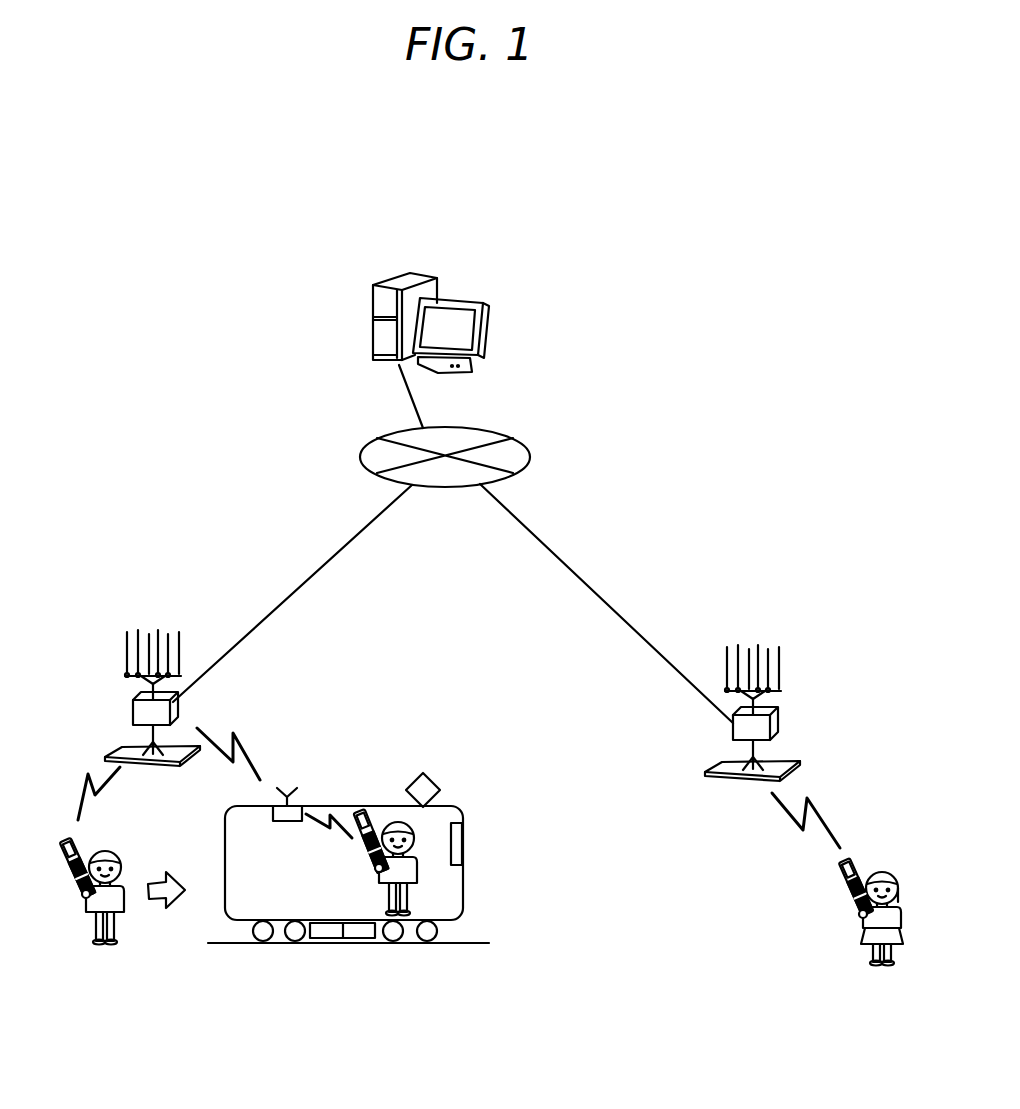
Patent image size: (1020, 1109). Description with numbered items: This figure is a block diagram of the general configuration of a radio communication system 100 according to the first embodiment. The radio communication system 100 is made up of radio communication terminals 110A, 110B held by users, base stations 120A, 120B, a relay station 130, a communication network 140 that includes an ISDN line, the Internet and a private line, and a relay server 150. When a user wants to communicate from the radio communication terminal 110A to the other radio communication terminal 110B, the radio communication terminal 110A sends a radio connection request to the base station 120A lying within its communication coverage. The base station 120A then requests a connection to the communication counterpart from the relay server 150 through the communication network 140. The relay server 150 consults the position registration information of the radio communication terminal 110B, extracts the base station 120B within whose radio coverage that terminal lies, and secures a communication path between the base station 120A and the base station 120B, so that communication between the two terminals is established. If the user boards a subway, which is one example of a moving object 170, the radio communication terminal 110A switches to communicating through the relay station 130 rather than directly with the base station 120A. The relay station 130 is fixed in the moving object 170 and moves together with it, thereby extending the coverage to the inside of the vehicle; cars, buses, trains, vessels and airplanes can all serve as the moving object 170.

The radio communication system 100 is at (650, 417).
The radio communication terminal 110A is at (72, 882).
The radio communication terminal 110B is at (847, 893).
The base station 120A is at (173, 710).
The base station 120B is at (770, 727).
The relay station 130 is at (307, 806).
The communication network 140 is at (385, 433).
The relay server 150 is at (426, 276).
The moving object 170 is at (463, 887).